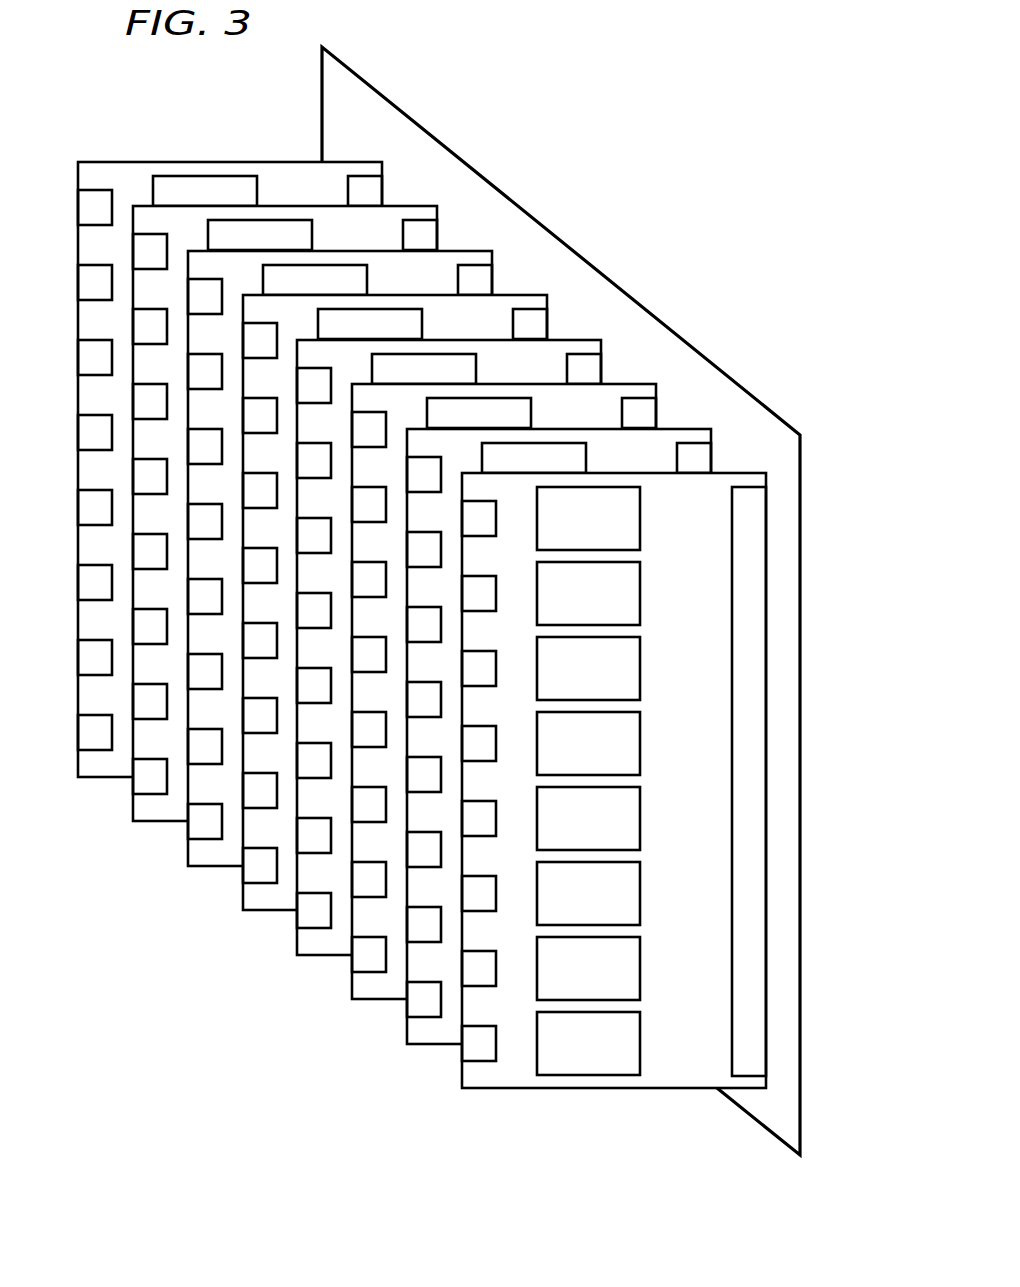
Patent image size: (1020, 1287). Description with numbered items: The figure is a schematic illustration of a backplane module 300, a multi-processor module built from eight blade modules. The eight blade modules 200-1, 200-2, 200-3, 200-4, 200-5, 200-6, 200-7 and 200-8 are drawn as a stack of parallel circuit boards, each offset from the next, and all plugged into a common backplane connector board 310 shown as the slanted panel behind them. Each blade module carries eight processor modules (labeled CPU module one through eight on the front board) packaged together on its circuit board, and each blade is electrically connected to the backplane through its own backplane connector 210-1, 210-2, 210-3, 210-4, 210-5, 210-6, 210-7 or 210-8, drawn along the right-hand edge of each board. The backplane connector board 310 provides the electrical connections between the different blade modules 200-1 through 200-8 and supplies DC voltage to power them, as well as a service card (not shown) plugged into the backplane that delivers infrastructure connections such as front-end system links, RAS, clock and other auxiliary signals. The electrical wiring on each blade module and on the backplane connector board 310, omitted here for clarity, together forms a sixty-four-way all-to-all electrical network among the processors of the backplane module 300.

The backplane module 300 is at (205, 76).
The backplane connector board 310 is at (562, 241).
The blade module 200-1 is at (617, 788).
The blade module 200-2 is at (561, 742).
The blade module 200-3 is at (506, 697).
The blade module 200-4 is at (451, 653).
The blade module 200-5 is at (397, 608).
The blade module 200-6 is at (342, 564).
The blade module 200-7 is at (287, 519).
The blade module 200-8 is at (232, 475).
The backplane connector 210-1 is at (749, 496).
The backplane connector 210-2 is at (697, 449).
The backplane connector 210-3 is at (642, 404).
The backplane connector 210-4 is at (587, 360).
The backplane connector 210-5 is at (533, 315).
The backplane connector 210-6 is at (478, 271).
The backplane connector 210-7 is at (423, 226).
The backplane connector 210-8 is at (368, 182).